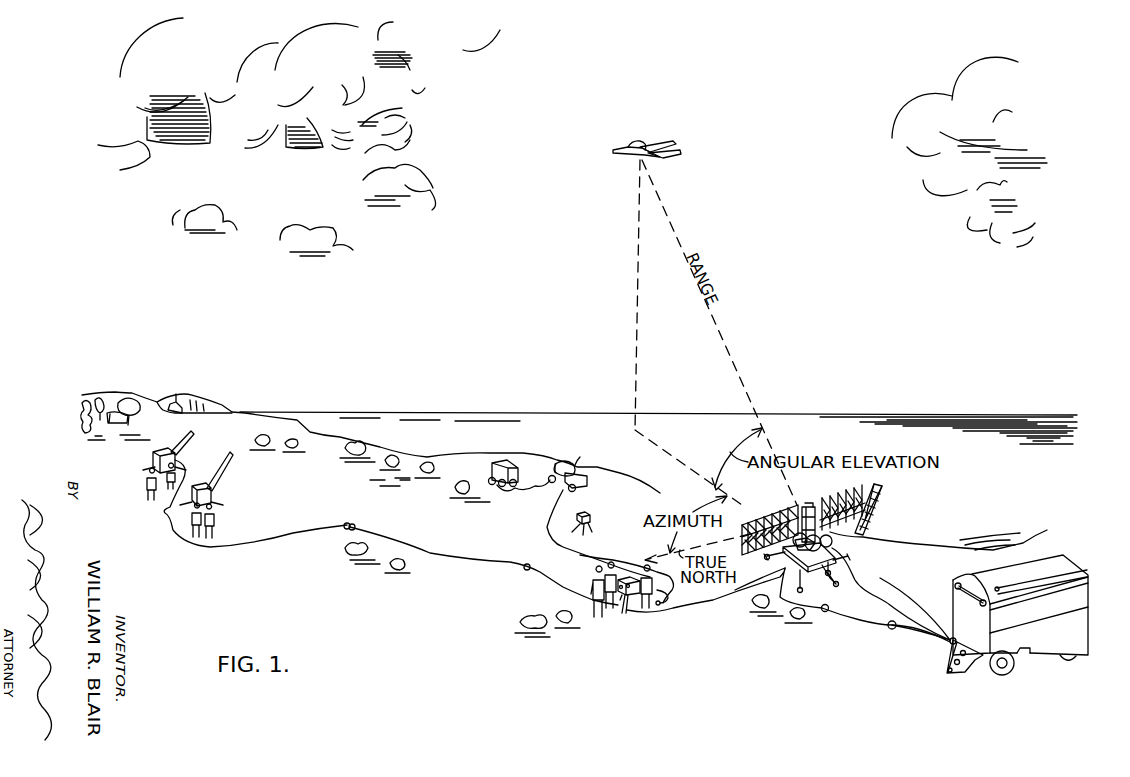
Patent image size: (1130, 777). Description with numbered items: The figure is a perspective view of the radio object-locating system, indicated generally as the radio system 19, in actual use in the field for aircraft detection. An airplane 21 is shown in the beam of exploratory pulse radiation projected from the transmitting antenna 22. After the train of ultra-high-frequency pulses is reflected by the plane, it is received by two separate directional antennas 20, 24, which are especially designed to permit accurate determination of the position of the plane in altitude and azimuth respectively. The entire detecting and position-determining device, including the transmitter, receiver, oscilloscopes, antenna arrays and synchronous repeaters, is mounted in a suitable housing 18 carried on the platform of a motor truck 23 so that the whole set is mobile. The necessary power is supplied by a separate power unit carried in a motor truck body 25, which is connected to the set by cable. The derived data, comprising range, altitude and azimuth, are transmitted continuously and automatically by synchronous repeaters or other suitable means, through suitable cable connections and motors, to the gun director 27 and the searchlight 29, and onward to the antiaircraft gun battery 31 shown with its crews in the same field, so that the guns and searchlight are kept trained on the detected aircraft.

The housing 18 is at (810, 505).
The radio system 19 is at (828, 531).
The directional antenna 20 is at (880, 489).
The airplane 21 is at (652, 147).
The transmitting antenna 22 is at (849, 487).
The motor truck 23 is at (838, 552).
The directional antenna 24 is at (775, 510).
The motor truck body 25 is at (980, 652).
The gun director 27 is at (628, 616).
The searchlight 29 is at (568, 463).
The anti-aircraft guns 31 is at (116, 491).